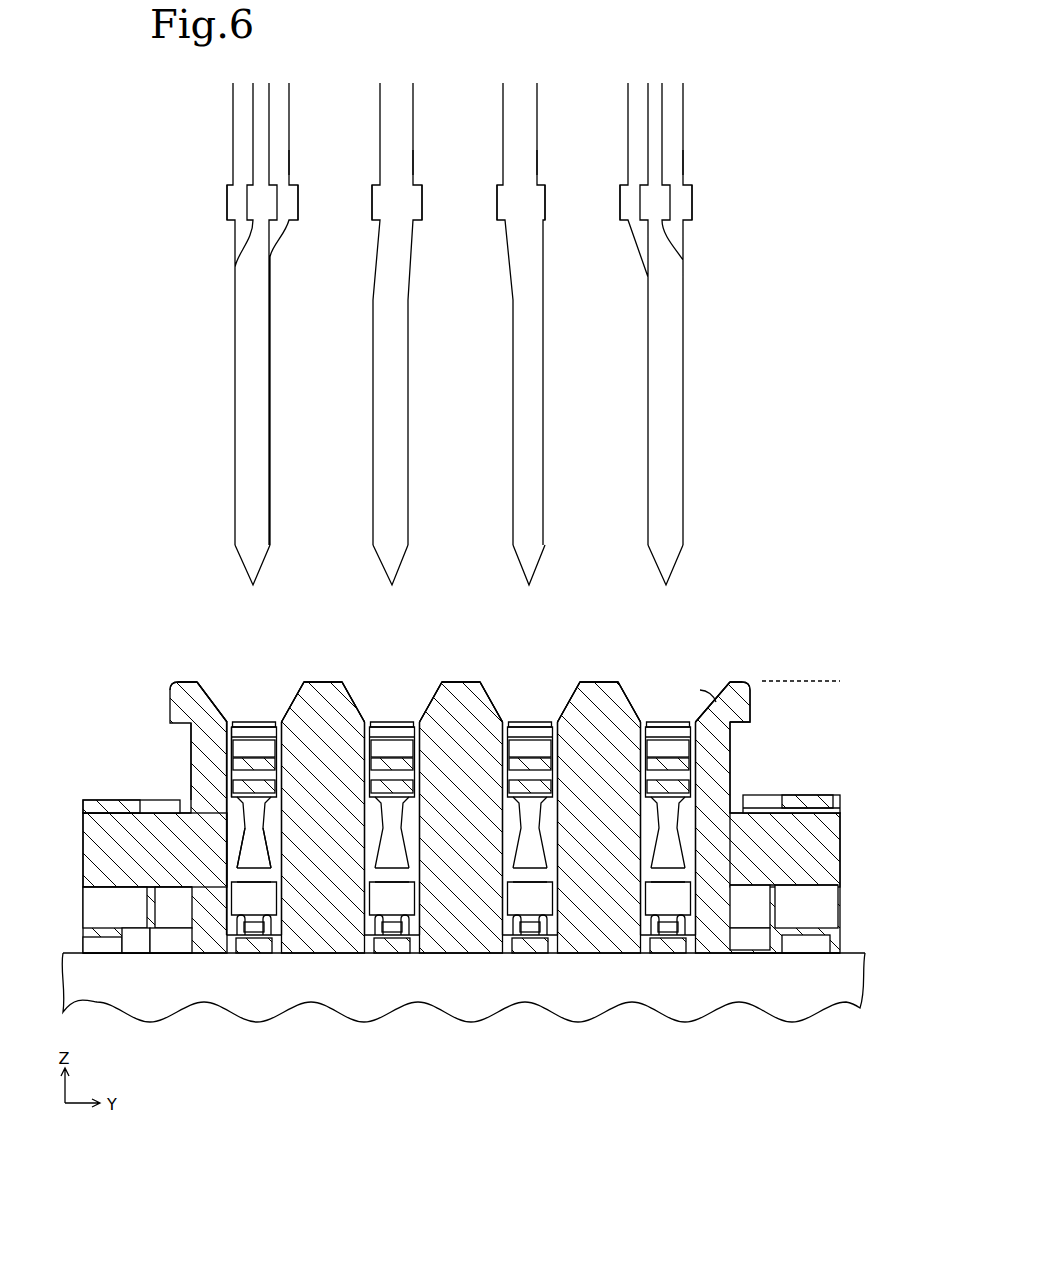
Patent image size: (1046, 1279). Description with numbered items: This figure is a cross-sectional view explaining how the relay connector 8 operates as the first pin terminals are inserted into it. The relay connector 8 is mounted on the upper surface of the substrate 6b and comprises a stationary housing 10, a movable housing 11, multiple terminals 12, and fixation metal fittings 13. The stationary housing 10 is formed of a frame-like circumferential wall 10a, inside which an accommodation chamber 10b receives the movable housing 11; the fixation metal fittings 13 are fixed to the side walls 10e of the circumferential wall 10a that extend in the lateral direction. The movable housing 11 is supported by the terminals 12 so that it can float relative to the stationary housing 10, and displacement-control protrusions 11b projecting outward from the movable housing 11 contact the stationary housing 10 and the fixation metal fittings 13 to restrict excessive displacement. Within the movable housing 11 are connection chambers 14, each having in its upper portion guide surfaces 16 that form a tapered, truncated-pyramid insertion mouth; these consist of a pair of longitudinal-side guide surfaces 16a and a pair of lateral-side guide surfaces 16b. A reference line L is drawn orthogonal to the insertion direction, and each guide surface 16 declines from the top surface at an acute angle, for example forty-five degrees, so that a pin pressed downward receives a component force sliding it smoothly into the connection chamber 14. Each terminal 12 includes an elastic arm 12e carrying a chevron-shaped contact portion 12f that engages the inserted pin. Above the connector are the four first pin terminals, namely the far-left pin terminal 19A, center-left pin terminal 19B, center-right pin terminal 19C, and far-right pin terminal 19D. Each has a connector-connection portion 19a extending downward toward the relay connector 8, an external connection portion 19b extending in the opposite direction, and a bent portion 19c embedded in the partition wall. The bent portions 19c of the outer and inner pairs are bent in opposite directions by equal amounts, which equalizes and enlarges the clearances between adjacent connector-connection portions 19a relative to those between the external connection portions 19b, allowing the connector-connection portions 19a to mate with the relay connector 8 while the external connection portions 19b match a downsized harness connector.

The substrate 6b is at (858, 1002).
The relay connector 8 is at (170, 683).
The stationary housing 10 is at (83, 905).
The circumferential wall 10a is at (101, 920).
The accommodation chamber 10b is at (750, 917).
The side walls 10e is at (188, 781).
The movable housing 11 is at (752, 708).
The displacement-control protrusions 11b is at (83, 845).
The terminals 12 is at (254, 905).
The elastic arm 12e is at (255, 832).
The contact portion 12f is at (232, 765).
The fixation metal fittings 13 is at (120, 800).
The connection chambers 14 is at (227, 733).
The guide surfaces 16 is at (435, 672).
The longitudinal-side guide surfaces 16a is at (250, 700).
The lateral-side guide surfaces 16b is at (205, 683).
The far-left pin terminal 19A is at (290, 107).
The center-left pin terminal 19B is at (414, 107).
The center-right pin terminal 19C is at (538, 107).
The far-right pin terminal 19D is at (663, 103).
The connector-connection portion 19a is at (271, 513).
The external connection portion 19b is at (290, 173).
The bent portion 19c is at (272, 256).
The reference line L is at (790, 681).